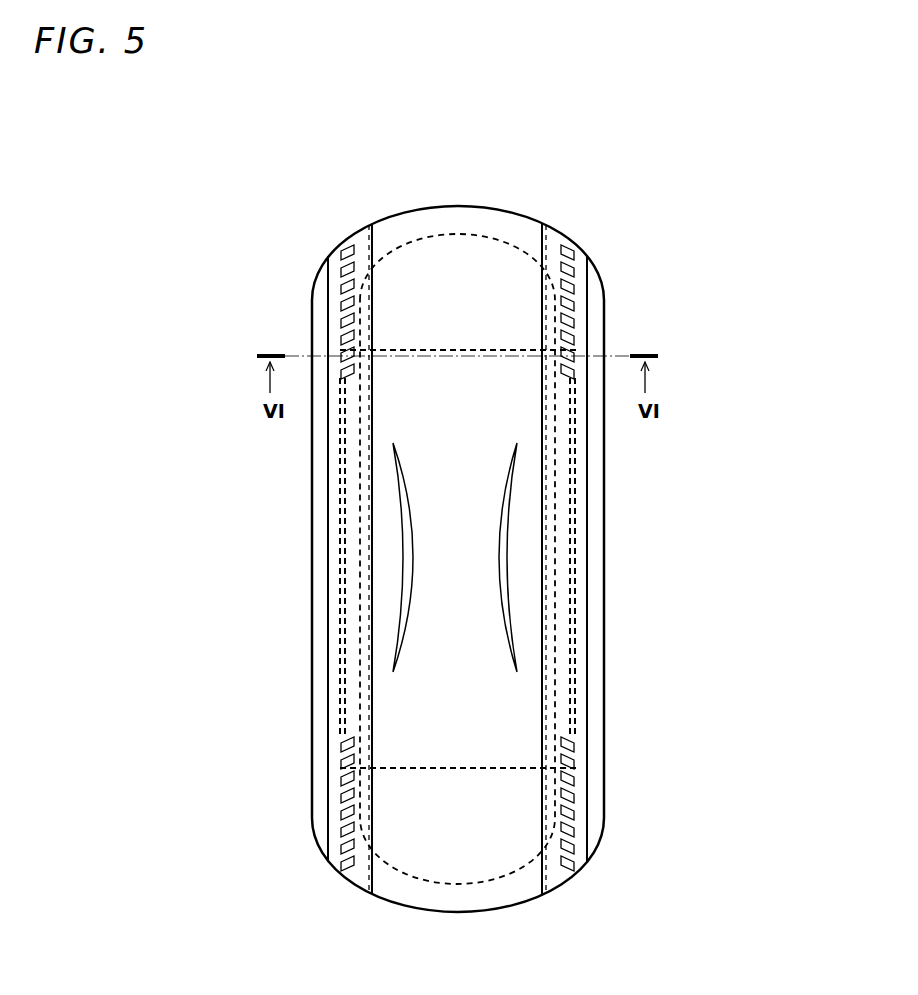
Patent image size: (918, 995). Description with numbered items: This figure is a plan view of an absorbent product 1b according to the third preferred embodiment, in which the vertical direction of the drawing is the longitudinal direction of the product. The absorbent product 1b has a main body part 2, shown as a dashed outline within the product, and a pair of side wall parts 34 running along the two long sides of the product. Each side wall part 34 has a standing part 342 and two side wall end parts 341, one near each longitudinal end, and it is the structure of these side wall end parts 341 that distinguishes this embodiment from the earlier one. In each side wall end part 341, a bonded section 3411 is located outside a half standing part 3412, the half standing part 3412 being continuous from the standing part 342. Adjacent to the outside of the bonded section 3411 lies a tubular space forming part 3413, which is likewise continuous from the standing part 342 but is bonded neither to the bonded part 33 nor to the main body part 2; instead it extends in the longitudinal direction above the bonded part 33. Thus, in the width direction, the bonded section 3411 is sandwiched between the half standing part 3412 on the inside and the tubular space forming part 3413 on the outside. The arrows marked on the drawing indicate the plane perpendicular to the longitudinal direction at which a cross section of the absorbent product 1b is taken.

The absorbent product 1b is at (439, 518).
The main body part 2 is at (459, 880).
The bonded part 33 is at (313, 650).
The side wall part 34 is at (458, 519).
The side wall end part 341 is at (458, 519).
The standing part 342 is at (352, 692).
The bonded section 3411 is at (346, 287).
The half standing part 3412 is at (362, 255).
The tubular space forming part 3413 is at (333, 292).